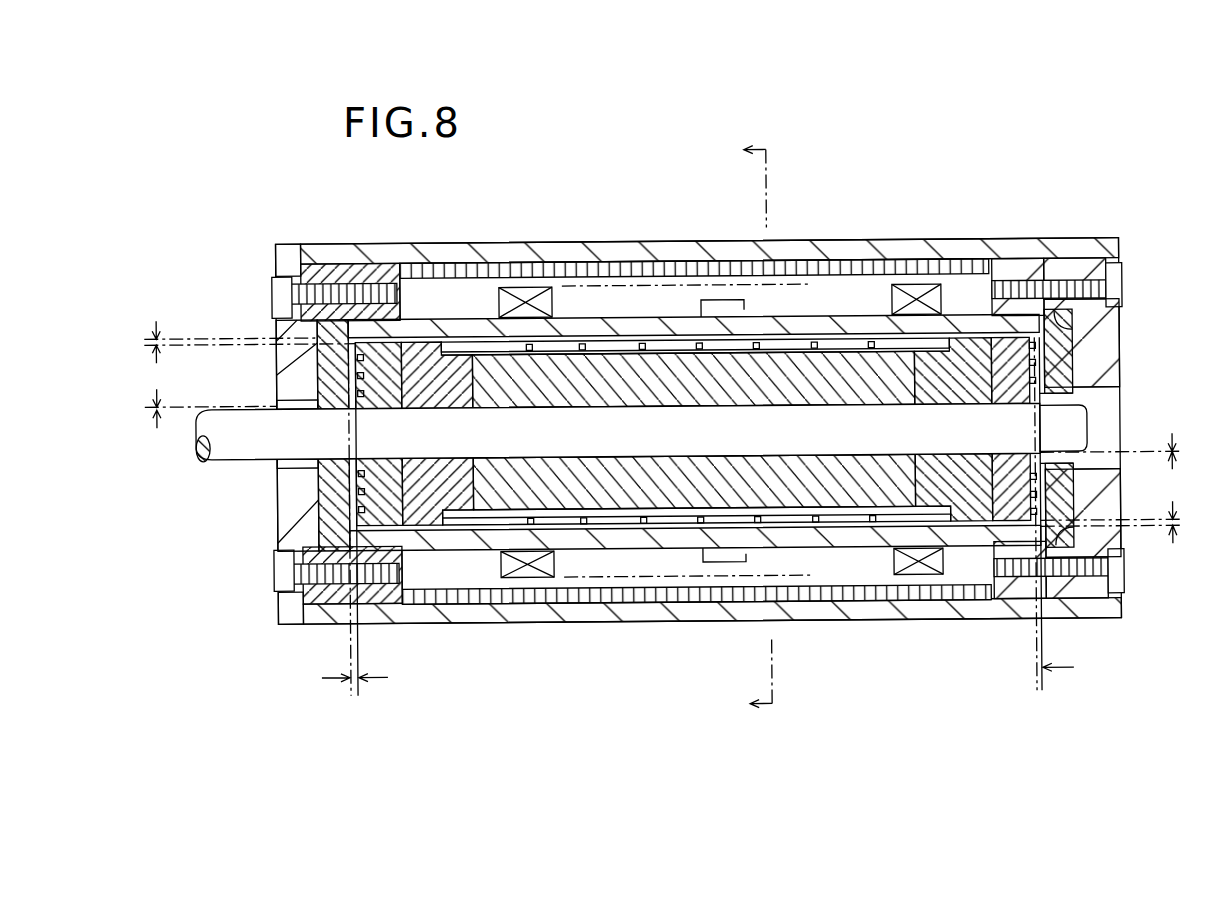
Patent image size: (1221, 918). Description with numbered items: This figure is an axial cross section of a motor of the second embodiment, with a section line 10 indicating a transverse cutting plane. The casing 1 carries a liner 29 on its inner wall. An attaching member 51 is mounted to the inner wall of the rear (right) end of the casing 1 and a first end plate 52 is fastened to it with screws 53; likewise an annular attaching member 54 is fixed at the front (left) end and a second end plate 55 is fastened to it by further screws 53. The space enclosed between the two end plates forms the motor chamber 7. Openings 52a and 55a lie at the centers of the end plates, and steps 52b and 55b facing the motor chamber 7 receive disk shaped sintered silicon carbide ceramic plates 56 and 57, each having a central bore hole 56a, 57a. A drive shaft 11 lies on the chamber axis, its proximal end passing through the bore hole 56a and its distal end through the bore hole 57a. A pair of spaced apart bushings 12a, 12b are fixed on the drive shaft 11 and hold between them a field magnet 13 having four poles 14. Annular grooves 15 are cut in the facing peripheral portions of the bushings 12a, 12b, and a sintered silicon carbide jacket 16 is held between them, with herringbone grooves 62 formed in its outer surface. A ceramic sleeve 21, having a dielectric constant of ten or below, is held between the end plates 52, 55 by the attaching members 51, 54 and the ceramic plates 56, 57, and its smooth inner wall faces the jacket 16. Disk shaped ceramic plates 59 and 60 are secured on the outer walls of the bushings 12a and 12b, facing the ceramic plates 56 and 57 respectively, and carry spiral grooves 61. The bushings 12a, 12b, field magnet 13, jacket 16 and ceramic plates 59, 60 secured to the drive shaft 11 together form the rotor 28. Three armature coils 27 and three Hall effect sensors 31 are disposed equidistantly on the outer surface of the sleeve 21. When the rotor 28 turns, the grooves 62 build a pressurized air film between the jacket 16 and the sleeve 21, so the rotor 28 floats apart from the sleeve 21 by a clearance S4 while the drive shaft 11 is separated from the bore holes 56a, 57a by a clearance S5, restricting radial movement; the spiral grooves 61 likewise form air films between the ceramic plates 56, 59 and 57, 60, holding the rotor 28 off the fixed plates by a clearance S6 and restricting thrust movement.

The casing 1 is at (640, 241).
The motor chamber 7 is at (427, 285).
The section line 10 is at (740, 427).
The drive shaft 11 is at (232, 412).
The bushing 12a is at (975, 512).
The bushing 12b is at (415, 560).
The field magnet 13 is at (685, 409).
The poles 14 is at (770, 466).
The annular grooves 15 is at (907, 350).
The jacket 16 is at (580, 343).
The sleeve 21 is at (838, 317).
The armature coils 27 is at (505, 288).
The rotor 28 is at (689, 321).
The liner 29 is at (887, 262).
The Hall effect sensors 31 is at (745, 305).
The attaching member 51 is at (1012, 262).
The first end plate 52 is at (1117, 318).
The opening 52a is at (1105, 394).
The step 52b is at (1065, 338).
The screws 53 is at (273, 292).
The annular attaching member 54 is at (372, 270).
The second end plate 55 is at (290, 550).
The opening 55a is at (283, 468).
The step 55b is at (316, 530).
The ceramic plate 56 is at (1065, 368).
The bore hole 56a is at (1045, 408).
The ceramic plate 57 is at (316, 500).
The bore hole 57a is at (352, 460).
The ceramic plate 59 is at (1020, 515).
The ceramic plate 60 is at (365, 603).
The spiral grooves 61 is at (358, 375).
The herringbone grooves 62 is at (815, 523).
The clearance S4 is at (666, 435).
The clearance S5 is at (675, 441).
The clearance S6 is at (691, 505).